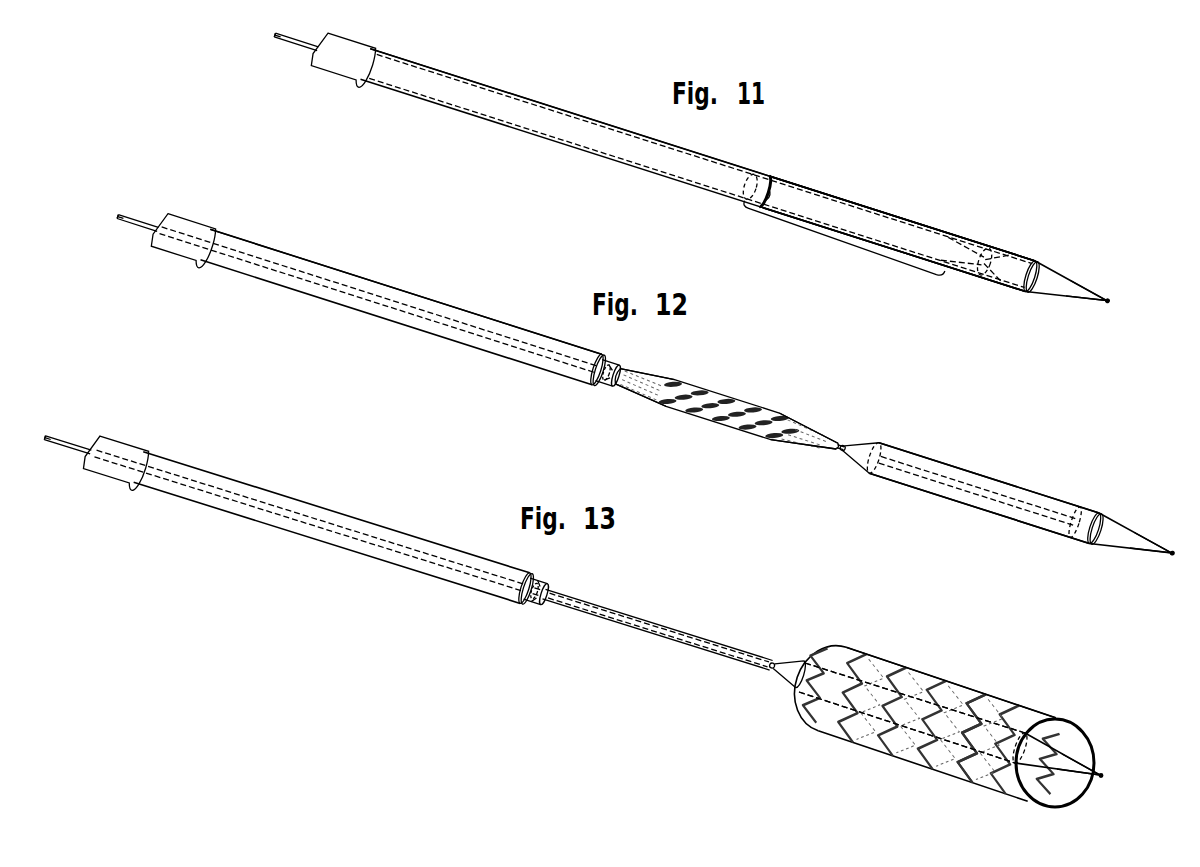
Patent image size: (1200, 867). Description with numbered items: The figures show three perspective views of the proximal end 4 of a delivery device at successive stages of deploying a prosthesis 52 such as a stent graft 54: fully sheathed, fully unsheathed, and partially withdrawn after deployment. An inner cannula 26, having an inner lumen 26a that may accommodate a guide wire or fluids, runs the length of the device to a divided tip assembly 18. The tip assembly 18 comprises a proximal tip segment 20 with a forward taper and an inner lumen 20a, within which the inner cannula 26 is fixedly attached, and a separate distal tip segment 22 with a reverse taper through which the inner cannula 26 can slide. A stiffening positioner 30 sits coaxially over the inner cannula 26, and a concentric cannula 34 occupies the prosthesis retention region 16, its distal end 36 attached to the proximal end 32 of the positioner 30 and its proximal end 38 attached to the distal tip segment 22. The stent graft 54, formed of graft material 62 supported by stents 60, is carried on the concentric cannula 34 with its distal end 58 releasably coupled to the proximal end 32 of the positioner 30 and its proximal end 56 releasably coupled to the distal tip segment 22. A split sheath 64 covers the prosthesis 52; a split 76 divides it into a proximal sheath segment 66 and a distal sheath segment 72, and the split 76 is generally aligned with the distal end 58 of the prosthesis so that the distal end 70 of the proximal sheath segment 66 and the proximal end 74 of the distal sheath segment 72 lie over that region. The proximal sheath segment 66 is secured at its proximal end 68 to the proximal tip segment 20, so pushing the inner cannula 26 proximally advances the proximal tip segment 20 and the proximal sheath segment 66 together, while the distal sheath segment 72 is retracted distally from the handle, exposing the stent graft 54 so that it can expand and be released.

In FIG. 11, the proximal end 4 is at (1122, 283).
In FIG. 12, the proximal end 4 is at (1177, 524).
In FIG. 13, the proximal end 4 is at (1110, 785).
In FIG. 11, the retention region 16 is at (826, 238).
In FIG. 11, the tip assembly 18 is at (1054, 270).
In FIG. 12, the tip assembly 18 is at (1117, 509).
In FIG. 13, the tip assembly 18 is at (1061, 733).
In FIG. 11, the proximal tip segment 20 is at (1060, 297).
In FIG. 12, the proximal tip segment 20 is at (1110, 543).
In FIG. 13, the proximal tip segment 20 is at (1022, 797).
In FIG. 11, the inner lumen 20a is at (1110, 305).
In FIG. 12, the inner lumen 20a is at (1174, 557).
In FIG. 13, the inner lumen 20a is at (1104, 771).
In FIG. 11, the distal tip segment 22 is at (992, 274).
In FIG. 12, the distal tip segment 22 is at (861, 460).
In FIG. 13, the distal tip segment 22 is at (789, 679).
In FIG. 11, the inner cannula 26 is at (300, 35).
In FIG. 12, the inner cannula 26 is at (142, 229).
In FIG. 13, the inner cannula 26 is at (71, 451).
In FIG. 11, the inner lumen 26a is at (278, 35).
In FIG. 12, the inner lumen 26a is at (119, 217).
In FIG. 13, the inner lumen 26a is at (46, 438).
In FIG. 11, the positioner 30 is at (350, 46).
In FIG. 12, the positioner 30 is at (196, 225).
In FIG. 13, the positioner 30 is at (123, 448).
In FIG. 11, the proximal end 32 is at (745, 196).
In FIG. 12, the proximal end 32 is at (618, 389).
In FIG. 13, the proximal end 32 is at (549, 608).
In FIG. 12, the concentric cannula 34 is at (843, 445).
In FIG. 13, the concentric cannula 34 is at (656, 625).
In FIG. 13, the distal end 36 is at (555, 589).
In FIG. 12, the proximal end 38 is at (853, 439).
In FIG. 13, the proximal end 38 is at (771, 660).
In FIG. 11, the prosthesis 52 is at (960, 274).
In FIG. 12, the prosthesis 52 is at (727, 411).
In FIG. 13, the prosthesis 52 is at (930, 722).
In FIG. 11, the stent graft 54 is at (960, 268).
In FIG. 12, the stent graft 54 is at (716, 414).
In FIG. 13, the stent graft 54 is at (888, 753).
In FIG. 12, the proximal end 56 is at (814, 456).
In FIG. 13, the proximal end 56 is at (1038, 814).
In FIG. 12, the distal end 58 is at (641, 367).
In FIG. 13, the distal end 58 is at (804, 745).
In FIG. 13, the stents 60 is at (941, 771).
In FIG. 13, the graft material 62 is at (847, 742).
In FIG. 11, the sheath 64 is at (698, 168).
In FIG. 12, the sheath 64 is at (401, 306).
In FIG. 13, the sheath 64 is at (332, 528).
In FIG. 11, the proximal sheath segment 66 is at (926, 222).
In FIG. 12, the proximal sheath segment 66 is at (976, 476).
In FIG. 13, the proximal sheath segment 66 is at (941, 686).
In FIG. 11, the proximal end 68 is at (1026, 259).
In FIG. 12, the proximal end 68 is at (1090, 511).
In FIG. 13, the proximal end 68 is at (1045, 730).
In FIG. 11, the distal end 70 is at (788, 176).
In FIG. 12, the distal end 70 is at (890, 442).
In FIG. 13, the distal end 70 is at (812, 652).
In FIG. 11, the distal sheath segment 72 is at (490, 88).
In FIG. 12, the distal sheath segment 72 is at (456, 307).
In FIG. 13, the distal sheath segment 72 is at (356, 520).
In FIG. 11, the proximal end 74 is at (763, 176).
In FIG. 12, the proximal end 74 is at (593, 388).
In FIG. 13, the proximal end 74 is at (519, 612).
In FIG. 11, the split 76 is at (770, 198).